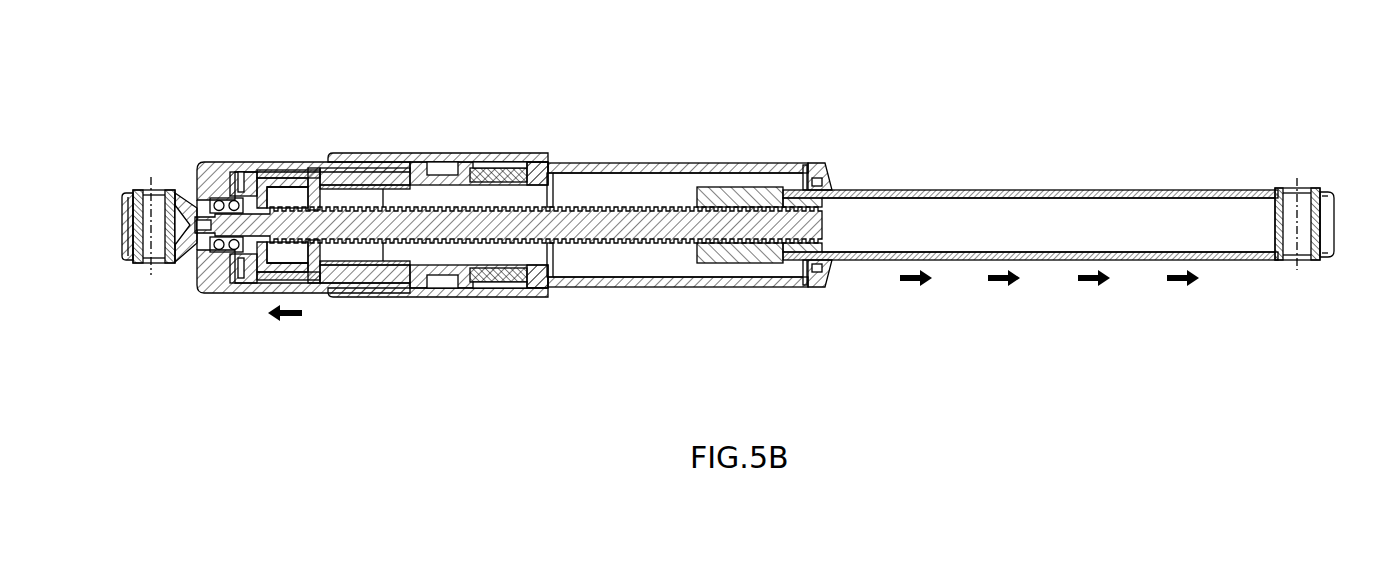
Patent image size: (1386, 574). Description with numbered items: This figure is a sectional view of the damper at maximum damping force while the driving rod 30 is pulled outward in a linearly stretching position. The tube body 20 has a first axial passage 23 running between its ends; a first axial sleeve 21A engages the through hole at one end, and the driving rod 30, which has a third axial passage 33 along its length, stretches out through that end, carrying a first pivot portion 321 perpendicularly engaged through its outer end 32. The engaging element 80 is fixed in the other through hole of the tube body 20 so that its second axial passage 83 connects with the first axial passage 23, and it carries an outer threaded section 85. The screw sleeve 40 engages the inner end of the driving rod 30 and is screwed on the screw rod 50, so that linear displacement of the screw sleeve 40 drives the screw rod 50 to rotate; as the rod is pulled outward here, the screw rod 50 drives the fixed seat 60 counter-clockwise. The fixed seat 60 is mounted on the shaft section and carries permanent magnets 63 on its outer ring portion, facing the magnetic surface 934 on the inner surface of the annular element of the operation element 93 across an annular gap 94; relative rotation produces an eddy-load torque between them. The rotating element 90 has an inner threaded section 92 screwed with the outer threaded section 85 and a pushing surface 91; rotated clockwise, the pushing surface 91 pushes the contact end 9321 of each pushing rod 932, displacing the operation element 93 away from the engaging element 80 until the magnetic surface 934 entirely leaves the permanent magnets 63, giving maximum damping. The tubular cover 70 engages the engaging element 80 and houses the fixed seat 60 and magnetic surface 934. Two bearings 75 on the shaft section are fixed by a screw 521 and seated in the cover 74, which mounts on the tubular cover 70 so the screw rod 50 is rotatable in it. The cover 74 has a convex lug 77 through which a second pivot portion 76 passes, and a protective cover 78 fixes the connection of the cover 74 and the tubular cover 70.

The tube body 20 is at (740, 162).
The first axial sleeve 21A is at (828, 160).
The first axial passage 23 is at (672, 186).
The driving rod 30 is at (1138, 190).
The outer end 32 is at (1328, 222).
The third axial passage 33 is at (1042, 200).
The first pivot portion 321 is at (1288, 193).
The screw sleeve 40 is at (745, 262).
The screw rod 50 is at (608, 210).
The screw 521 is at (195, 258).
The fixed seat 60 is at (262, 176).
The permanent magnets 63 is at (300, 176).
The tubular cover 70 is at (312, 165).
The cover 74 is at (245, 283).
The bearings 75 is at (222, 256).
The second pivot portion 76 is at (158, 200).
The convex lug 77 is at (110, 190).
The protective cover 78 is at (208, 160).
The engaging element 80 is at (520, 158).
The second axial passage 83 is at (548, 170).
The outer threaded section 85 is at (480, 164).
The rotating element 90 is at (440, 155).
The pushing surface 91 is at (418, 162).
The inner threaded section 92 is at (468, 160).
The operation element 93 is at (352, 166).
The annular gap 94 is at (283, 178).
The pushing rod 932 is at (370, 172).
The magnetic surface 934 is at (330, 166).
The contact end 9321 is at (405, 185).